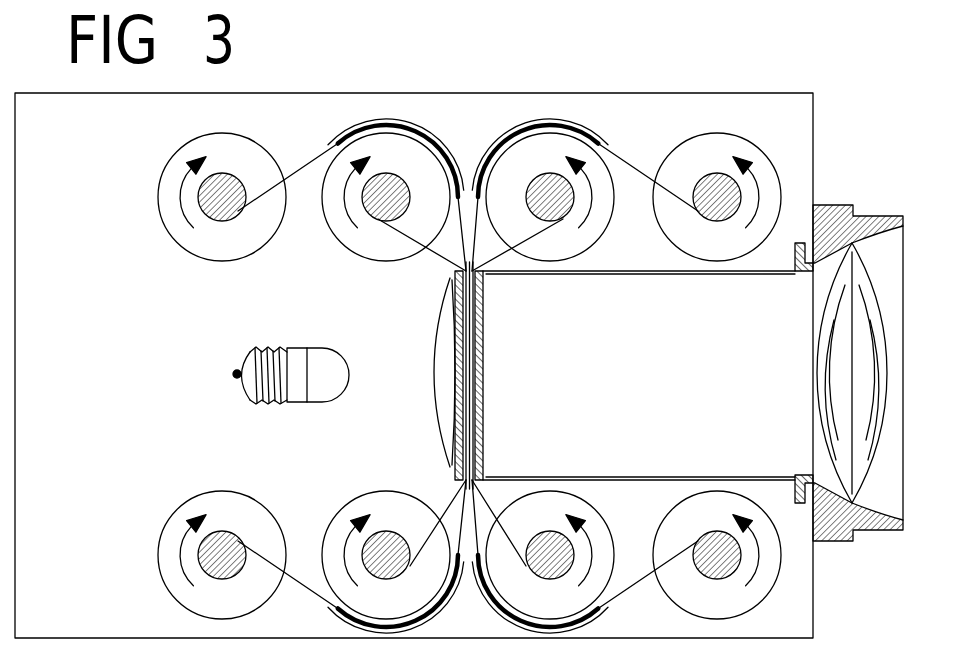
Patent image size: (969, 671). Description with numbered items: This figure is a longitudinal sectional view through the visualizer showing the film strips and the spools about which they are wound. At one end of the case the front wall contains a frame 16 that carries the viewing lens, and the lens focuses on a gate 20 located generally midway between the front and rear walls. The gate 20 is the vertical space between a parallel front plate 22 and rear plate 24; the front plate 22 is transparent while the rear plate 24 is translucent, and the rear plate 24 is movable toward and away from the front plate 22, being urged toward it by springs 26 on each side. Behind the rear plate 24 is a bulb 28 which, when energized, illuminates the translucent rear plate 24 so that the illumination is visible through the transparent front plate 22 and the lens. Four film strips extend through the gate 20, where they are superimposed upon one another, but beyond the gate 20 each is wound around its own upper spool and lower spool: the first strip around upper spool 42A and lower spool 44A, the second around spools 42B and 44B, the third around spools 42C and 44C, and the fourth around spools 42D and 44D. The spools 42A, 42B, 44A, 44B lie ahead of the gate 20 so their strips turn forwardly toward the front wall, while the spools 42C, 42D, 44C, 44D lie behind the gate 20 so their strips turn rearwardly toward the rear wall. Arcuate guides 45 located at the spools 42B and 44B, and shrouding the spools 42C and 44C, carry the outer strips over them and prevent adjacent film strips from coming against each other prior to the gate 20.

The frame 16 is at (843, 205).
The gate 20 is at (468, 347).
The front plate 22 is at (485, 392).
The rear plate 24 is at (457, 340).
The springs 26 is at (437, 333).
The bulb 28 is at (240, 383).
The upper spool 42A is at (717, 128).
The upper spool 42B is at (612, 225).
The upper spool 42C is at (348, 255).
The upper spool 42D is at (185, 252).
The lower spool 44A is at (718, 488).
The lower spool 44B is at (550, 488).
The lower spool 44C is at (398, 490).
The lower spool 44D is at (165, 528).
The arcuate guides 45 is at (340, 140).